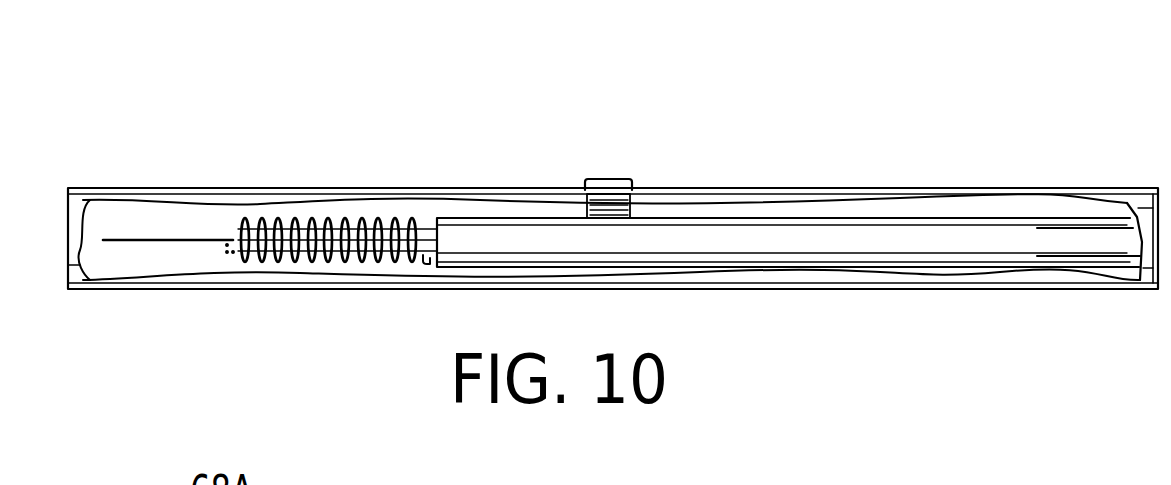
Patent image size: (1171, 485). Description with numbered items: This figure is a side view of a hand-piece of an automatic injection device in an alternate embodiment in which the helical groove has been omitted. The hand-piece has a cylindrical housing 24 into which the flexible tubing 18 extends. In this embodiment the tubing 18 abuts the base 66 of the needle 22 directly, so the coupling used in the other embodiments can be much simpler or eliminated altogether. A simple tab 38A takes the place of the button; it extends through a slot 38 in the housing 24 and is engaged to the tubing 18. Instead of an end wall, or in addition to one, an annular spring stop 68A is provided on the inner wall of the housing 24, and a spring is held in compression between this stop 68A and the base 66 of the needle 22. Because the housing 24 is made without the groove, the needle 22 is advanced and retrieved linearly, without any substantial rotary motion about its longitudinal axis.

The flexible tubing 18 is at (762, 237).
The needle 22 is at (150, 239).
The cylindrical housing 24 is at (923, 188).
The slot 38 is at (568, 172).
The tab 38A is at (630, 183).
The base of needle 66 is at (236, 222).
The annular spring stop 68A is at (230, 233).